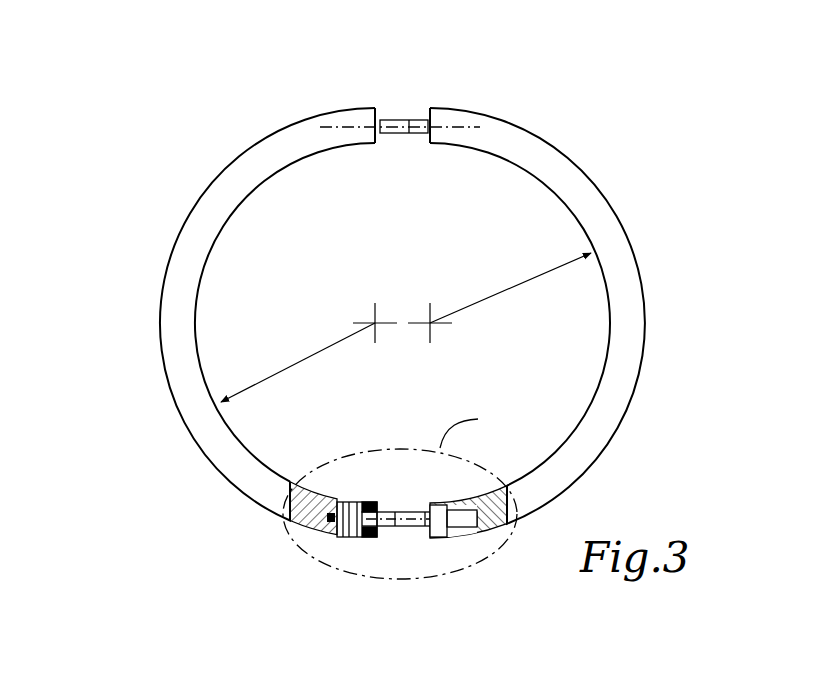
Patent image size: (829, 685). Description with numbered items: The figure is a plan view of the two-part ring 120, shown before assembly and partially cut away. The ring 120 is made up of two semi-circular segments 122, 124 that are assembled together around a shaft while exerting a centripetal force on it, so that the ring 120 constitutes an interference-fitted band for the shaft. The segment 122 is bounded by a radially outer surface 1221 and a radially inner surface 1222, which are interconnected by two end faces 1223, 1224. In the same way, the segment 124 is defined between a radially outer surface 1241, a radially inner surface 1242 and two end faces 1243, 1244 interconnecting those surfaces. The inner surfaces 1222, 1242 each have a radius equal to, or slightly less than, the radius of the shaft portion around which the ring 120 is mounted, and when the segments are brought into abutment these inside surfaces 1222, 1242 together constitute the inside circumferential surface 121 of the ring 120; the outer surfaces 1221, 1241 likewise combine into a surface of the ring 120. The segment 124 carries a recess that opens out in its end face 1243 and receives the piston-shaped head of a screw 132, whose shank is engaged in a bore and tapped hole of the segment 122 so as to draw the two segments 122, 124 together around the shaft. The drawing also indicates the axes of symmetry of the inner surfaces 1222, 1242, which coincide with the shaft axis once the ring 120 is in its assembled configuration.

The ring 120 is at (175, 178).
The inside circumferential surface 121 is at (116, 500).
The segment 122 is at (593, 208).
The segment 124 is at (182, 350).
The screw 132 is at (398, 118).
The radially outer surface 1221 is at (536, 514).
The radially inner surface 1222 is at (586, 403).
The end face 1223 is at (427, 533).
The end face 1224 is at (428, 112).
The radially outer surface 1241 is at (232, 491).
The radially inner surface 1242 is at (221, 237).
The end face 1243 is at (380, 534).
The end face 1244 is at (381, 112).